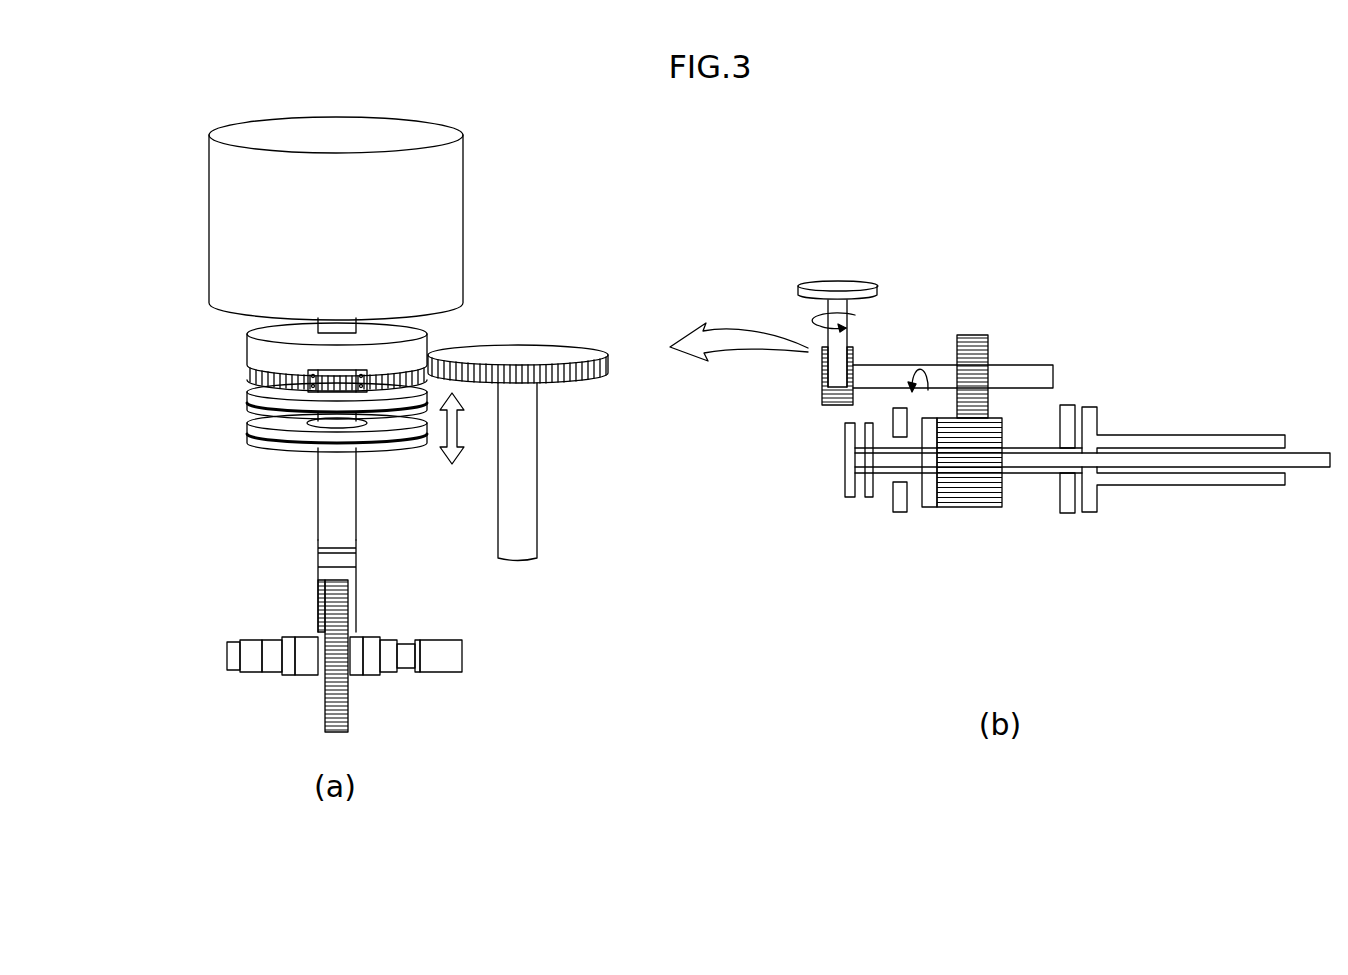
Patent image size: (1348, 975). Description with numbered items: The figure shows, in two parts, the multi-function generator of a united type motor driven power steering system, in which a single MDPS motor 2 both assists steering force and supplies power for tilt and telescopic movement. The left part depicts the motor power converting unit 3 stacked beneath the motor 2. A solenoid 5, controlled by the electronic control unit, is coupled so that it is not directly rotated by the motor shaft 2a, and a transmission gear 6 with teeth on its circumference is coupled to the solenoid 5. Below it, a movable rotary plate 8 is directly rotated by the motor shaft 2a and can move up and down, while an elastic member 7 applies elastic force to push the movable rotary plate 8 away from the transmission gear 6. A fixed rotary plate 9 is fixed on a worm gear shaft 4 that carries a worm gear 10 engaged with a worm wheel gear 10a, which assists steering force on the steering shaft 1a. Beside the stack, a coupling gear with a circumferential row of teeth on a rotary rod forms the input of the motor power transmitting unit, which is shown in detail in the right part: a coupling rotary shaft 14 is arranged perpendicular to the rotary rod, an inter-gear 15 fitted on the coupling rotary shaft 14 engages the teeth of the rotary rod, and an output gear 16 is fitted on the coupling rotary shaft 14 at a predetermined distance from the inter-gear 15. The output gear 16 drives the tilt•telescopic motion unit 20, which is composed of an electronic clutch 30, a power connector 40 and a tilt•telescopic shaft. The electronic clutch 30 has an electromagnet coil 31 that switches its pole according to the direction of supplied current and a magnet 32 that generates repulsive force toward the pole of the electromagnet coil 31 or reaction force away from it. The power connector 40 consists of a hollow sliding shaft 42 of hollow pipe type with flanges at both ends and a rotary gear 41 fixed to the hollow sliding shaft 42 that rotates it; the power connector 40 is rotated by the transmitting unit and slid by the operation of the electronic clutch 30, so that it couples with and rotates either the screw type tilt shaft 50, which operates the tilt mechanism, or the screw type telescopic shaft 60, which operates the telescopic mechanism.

The MDPS motor 2 is at (336, 127).
The motor shaft 2a is at (336, 328).
The motor power converting unit 3 is at (256, 405).
The worm gear shaft 4 is at (330, 480).
The solenoid 5 is at (255, 343).
The transmission gear 6 is at (248, 372).
The elastic member 7 is at (258, 387).
The movable rotary plate 8 is at (250, 404).
The fixed rotary plate 9 is at (283, 447).
The worm gear 10 is at (330, 565).
The worm wheel gear 10a is at (337, 612).
The steering shaft 1a is at (270, 665).
The coupling rotary shaft 14 is at (880, 373).
The inter-gear 15 is at (853, 350).
The output gear 16 is at (989, 295).
The tilt•telescopic motion unit 20 is at (1059, 373).
The electronic clutch 30 is at (957, 518).
The electromagnet coil 31 is at (898, 500).
The magnet 32 is at (928, 500).
The power connector 40 is at (1006, 524).
The rotary gear 41 is at (962, 497).
The hollow sliding shaft 42 is at (1041, 478).
The tilt shaft 50 is at (1240, 440).
The telescopic shaft 60 is at (1213, 462).